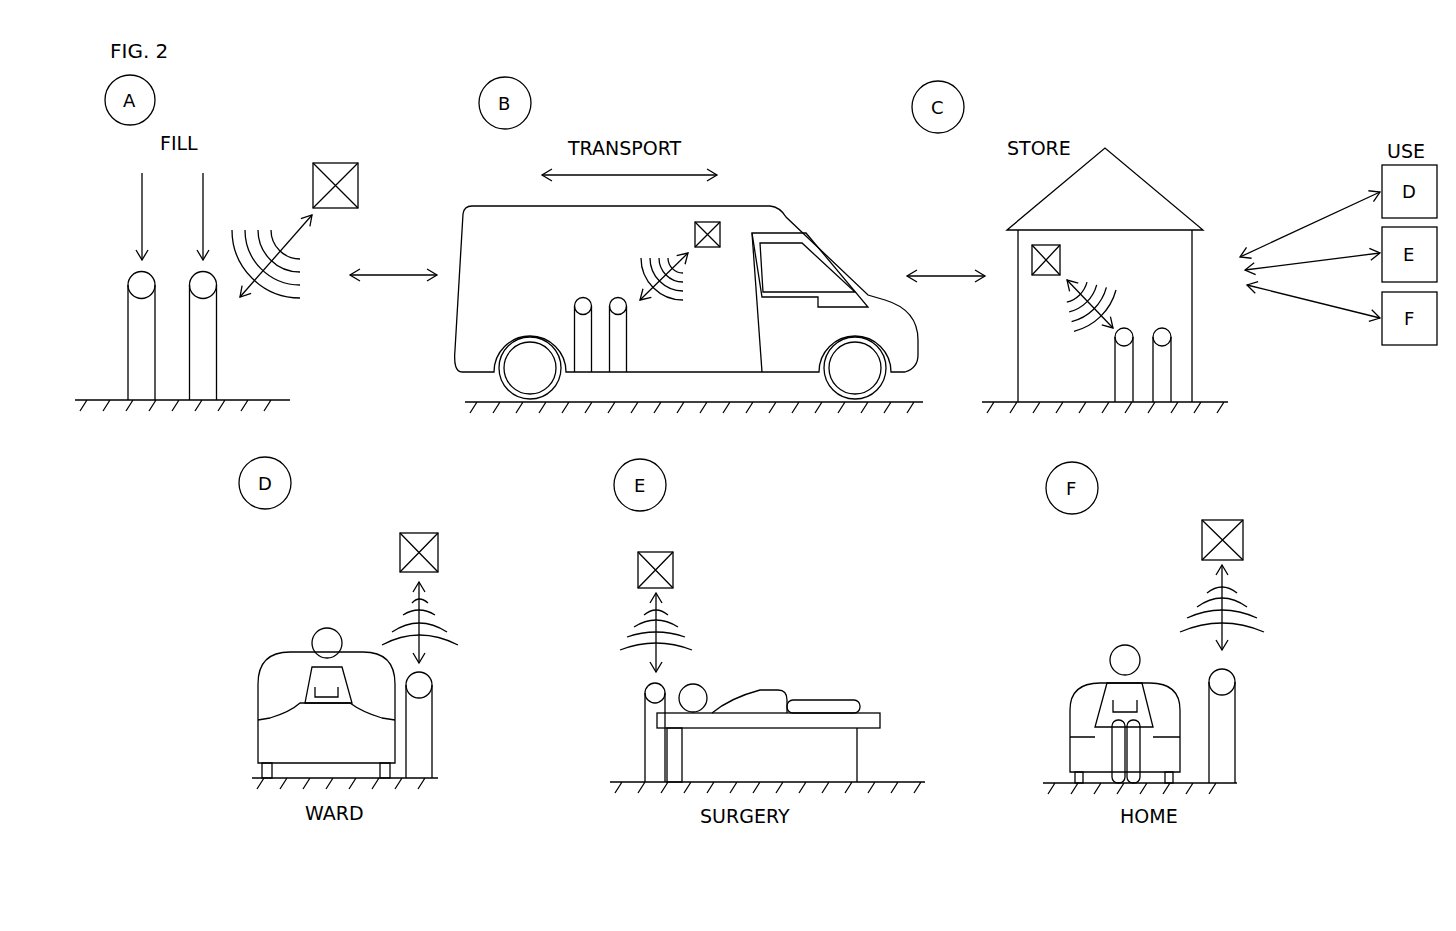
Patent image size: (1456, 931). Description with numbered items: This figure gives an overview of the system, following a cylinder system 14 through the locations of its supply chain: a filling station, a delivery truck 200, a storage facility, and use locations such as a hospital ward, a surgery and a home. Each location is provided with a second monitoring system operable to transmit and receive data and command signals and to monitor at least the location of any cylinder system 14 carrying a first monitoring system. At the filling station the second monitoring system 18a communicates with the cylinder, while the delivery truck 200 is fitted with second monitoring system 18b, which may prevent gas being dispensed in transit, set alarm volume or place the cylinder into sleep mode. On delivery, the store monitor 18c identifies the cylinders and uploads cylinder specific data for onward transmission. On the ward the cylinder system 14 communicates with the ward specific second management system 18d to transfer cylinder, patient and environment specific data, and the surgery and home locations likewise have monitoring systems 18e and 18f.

The cylinder system 14 is at (217, 352).
The second monitoring system 18a is at (342, 163).
The second monitoring system 18b is at (712, 204).
The second monitoring system 18c is at (1012, 231).
The second monitoring system 18d is at (412, 533).
The second monitoring system 18e is at (676, 560).
The second monitoring system 18f is at (1230, 520).
The delivery truck 200 is at (790, 210).